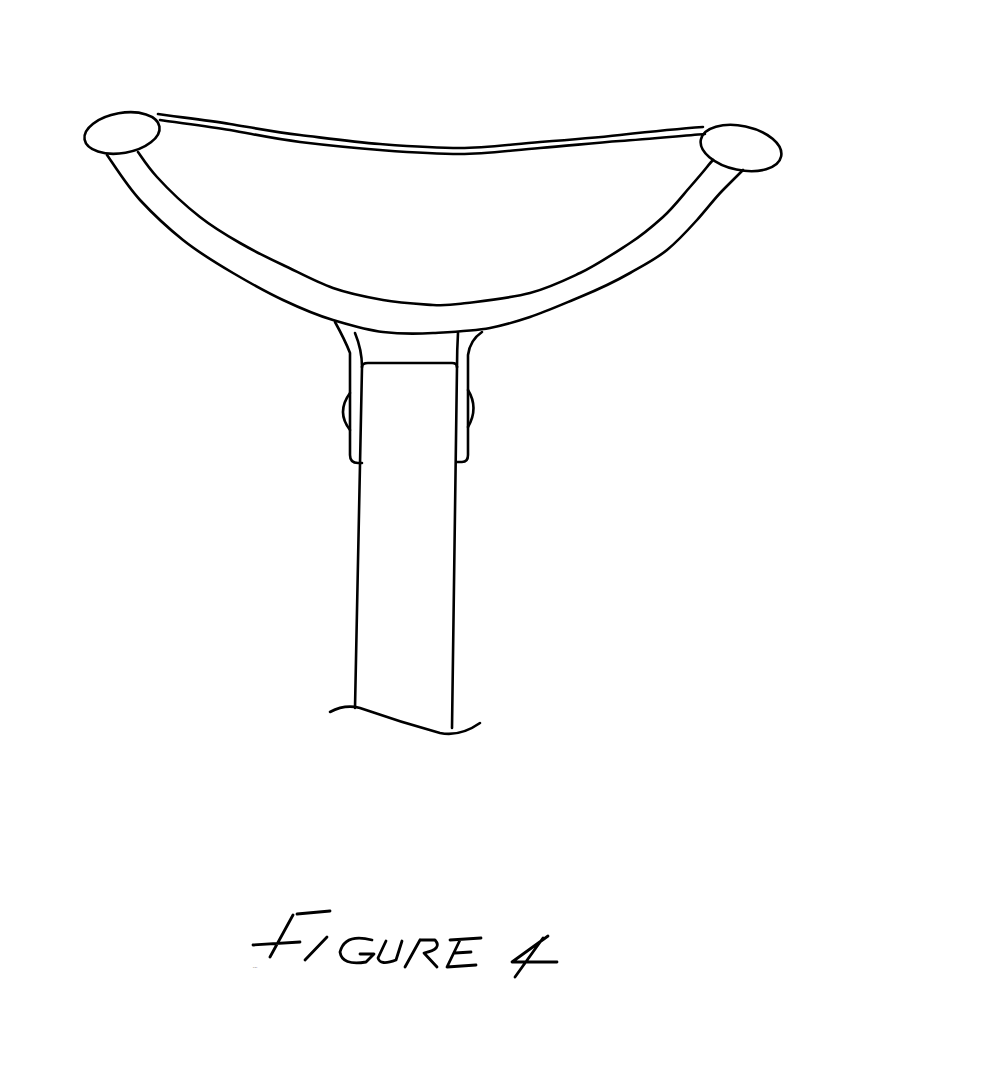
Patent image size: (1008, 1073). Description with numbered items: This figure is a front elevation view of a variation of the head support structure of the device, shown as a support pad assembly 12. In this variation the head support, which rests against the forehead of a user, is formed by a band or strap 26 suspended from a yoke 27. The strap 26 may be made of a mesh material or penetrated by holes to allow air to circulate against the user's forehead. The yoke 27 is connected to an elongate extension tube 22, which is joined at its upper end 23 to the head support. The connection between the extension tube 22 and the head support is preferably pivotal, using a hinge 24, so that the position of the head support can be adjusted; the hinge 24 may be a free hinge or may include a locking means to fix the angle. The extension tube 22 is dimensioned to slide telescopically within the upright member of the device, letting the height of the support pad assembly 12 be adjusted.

The support pad assembly 12 is at (555, 400).
The extension tube 22 is at (380, 627).
The upper end 23 is at (415, 363).
The hinge 24 is at (343, 452).
The strap 26 is at (460, 148).
The yoke 27 is at (648, 250).